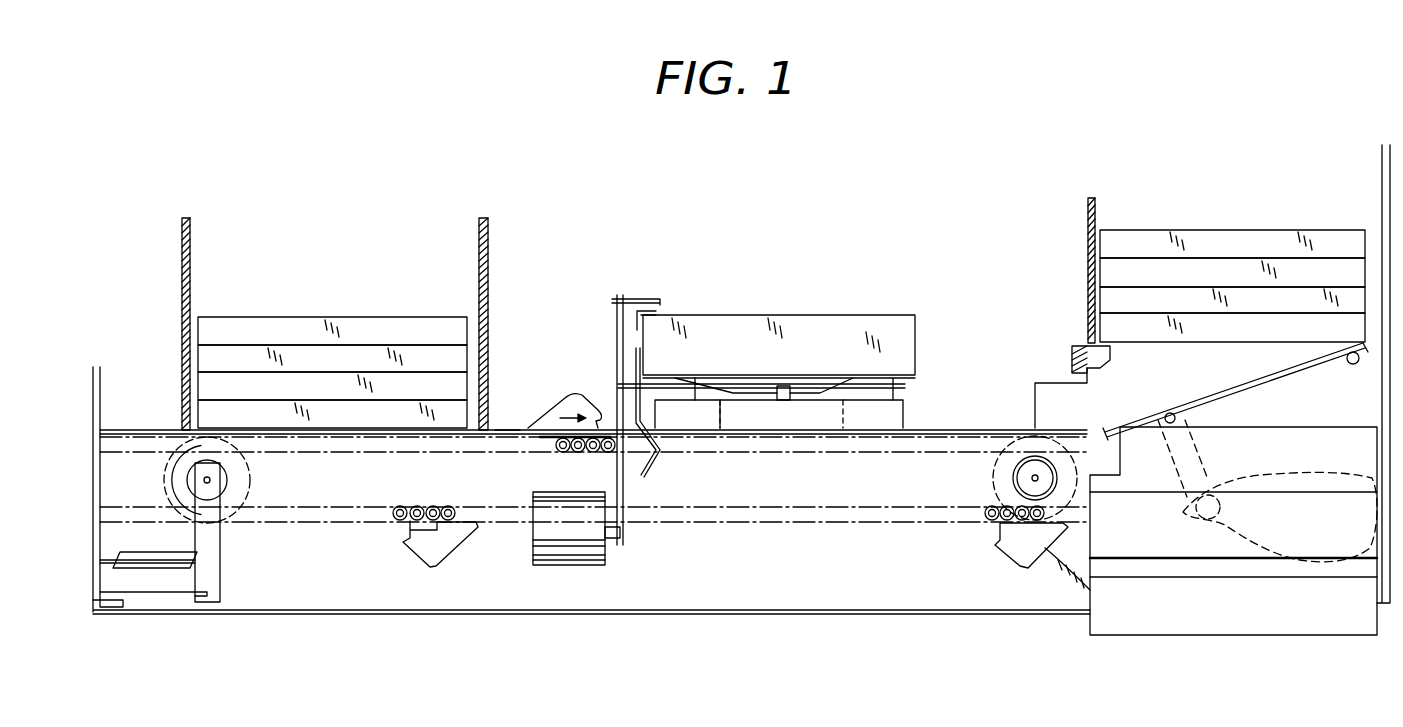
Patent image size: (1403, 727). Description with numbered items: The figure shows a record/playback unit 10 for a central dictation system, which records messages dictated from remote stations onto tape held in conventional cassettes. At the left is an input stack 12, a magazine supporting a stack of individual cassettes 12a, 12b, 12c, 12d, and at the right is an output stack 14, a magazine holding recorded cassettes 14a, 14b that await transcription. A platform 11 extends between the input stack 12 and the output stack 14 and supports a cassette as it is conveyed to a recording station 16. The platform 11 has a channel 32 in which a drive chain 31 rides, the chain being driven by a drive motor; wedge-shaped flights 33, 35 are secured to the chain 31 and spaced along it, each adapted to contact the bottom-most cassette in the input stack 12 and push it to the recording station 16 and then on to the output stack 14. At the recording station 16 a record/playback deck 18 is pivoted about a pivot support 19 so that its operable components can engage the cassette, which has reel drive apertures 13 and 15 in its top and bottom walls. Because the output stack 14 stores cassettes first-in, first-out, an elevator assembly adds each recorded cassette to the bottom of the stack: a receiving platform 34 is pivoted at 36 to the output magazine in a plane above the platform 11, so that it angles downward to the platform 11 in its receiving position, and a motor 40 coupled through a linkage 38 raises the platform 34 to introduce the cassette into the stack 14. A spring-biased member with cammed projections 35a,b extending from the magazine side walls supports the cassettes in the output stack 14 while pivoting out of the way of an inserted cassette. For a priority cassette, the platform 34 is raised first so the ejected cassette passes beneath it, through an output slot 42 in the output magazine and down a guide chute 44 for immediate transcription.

The record/playback unit 10 is at (676, 222).
The platform 11 is at (947, 428).
The input stack 12 is at (442, 279).
The cassette 12a is at (243, 343).
The cassette 12b is at (243, 370).
The cassette 12c is at (243, 398).
The cassette 12d is at (243, 426).
The reel drive aperture 13 is at (730, 415).
The output stack 14 is at (1226, 239).
The cassette 14a is at (1232, 300).
The cassette 14b is at (1232, 327).
The reel drive aperture 15 is at (843, 415).
The recording station 16 is at (942, 388).
The record/playback deck 18 is at (722, 315).
The pivot support 19 is at (617, 386).
The drive chain 31 is at (563, 454).
The channel 32 is at (506, 436).
The flight 33 is at (530, 426).
The receiving platform 34 is at (1228, 394).
The flight 35 is at (455, 555).
The projections 35a,b is at (1103, 352).
The pivot 36 is at (1349, 363).
The linkage 38 is at (1215, 472).
The motor 40 is at (1328, 466).
The output slot 42 is at (1060, 402).
The chute 44 is at (1127, 496).